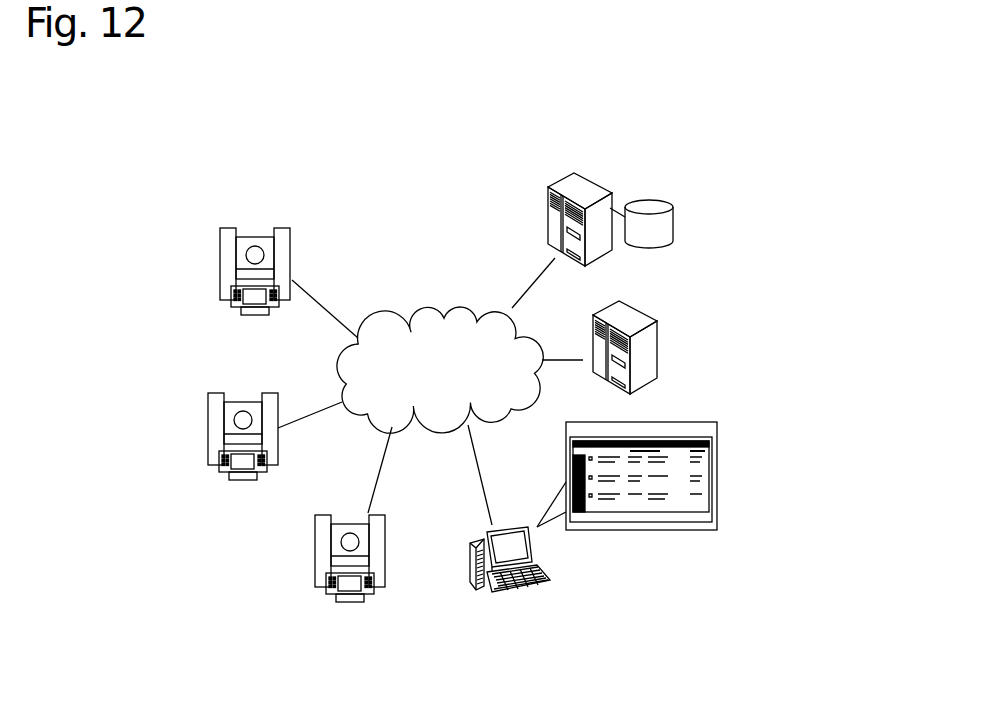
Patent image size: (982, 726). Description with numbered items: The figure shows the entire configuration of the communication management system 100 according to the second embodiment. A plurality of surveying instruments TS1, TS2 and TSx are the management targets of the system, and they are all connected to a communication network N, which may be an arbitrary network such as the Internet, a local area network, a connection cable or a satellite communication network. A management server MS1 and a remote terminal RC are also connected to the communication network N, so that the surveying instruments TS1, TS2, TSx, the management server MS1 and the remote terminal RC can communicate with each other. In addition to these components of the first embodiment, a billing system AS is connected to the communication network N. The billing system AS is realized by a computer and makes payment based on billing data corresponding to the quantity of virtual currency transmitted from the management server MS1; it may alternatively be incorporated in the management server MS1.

The surveying instrument TS1 is at (220, 263).
The surveying instrument TS2 is at (208, 423).
The surveying instrument TSx is at (315, 560).
The communication network N is at (417, 308).
The management server MS1 is at (595, 182).
The billing system AS is at (657, 338).
The remote terminal RC is at (528, 585).
The communication management system 100 is at (712, 447).